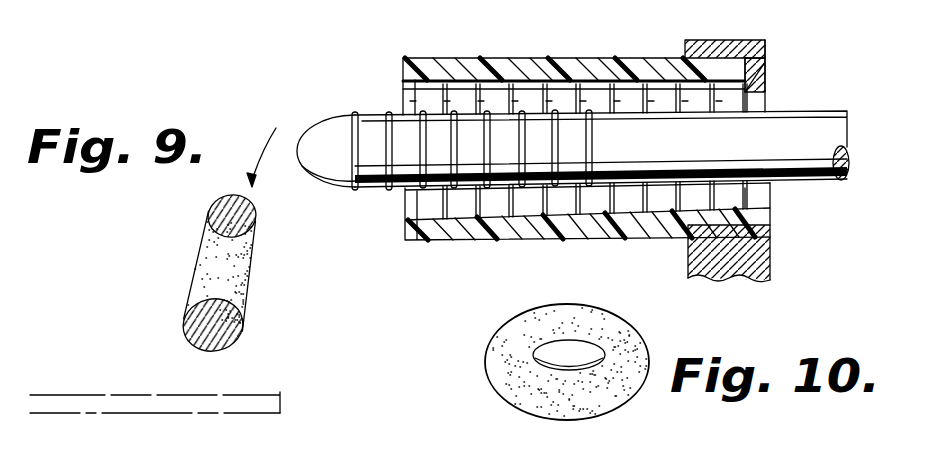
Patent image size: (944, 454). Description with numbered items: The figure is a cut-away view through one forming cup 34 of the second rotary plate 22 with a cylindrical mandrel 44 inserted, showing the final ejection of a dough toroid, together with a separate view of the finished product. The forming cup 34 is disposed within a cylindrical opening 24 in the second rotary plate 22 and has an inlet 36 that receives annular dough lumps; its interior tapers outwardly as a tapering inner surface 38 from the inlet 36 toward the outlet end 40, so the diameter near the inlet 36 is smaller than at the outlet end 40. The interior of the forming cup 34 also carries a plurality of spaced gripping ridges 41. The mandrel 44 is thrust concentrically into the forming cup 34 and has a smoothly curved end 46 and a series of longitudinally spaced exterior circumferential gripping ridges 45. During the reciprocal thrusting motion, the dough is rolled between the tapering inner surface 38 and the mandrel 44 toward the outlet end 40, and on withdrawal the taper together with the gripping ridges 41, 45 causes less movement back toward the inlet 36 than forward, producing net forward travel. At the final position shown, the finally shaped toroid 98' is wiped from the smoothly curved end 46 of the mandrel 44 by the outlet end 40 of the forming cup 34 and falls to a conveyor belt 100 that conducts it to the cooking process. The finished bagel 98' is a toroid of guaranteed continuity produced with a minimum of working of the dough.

In FIG. 9, the second rotary plate 22 is at (745, 254).
In FIG. 9, the cylindrical opening 24 is at (750, 204).
In FIG. 9, the forming cup 34 is at (472, 66).
In FIG. 9, the inlet 36 is at (758, 90).
In FIG. 9, the tapering inner surface 38 is at (627, 93).
In FIG. 9, the outlet end 40 is at (413, 219).
In FIG. 9, the gripping ridges 41 is at (481, 203).
In FIG. 9, the cylindrical mandrel 44 is at (816, 123).
In FIG. 9, the exterior circumferential gripping ridges 45 is at (357, 113).
In FIG. 9, the smoothly curved end 46 is at (318, 140).
In FIG. 9, the finally shaped toroid 98' is at (183, 273).
In FIG. 10, the finally shaped toroid 98' is at (529, 362).
In FIG. 9, the conveyor belt 100 is at (115, 395).